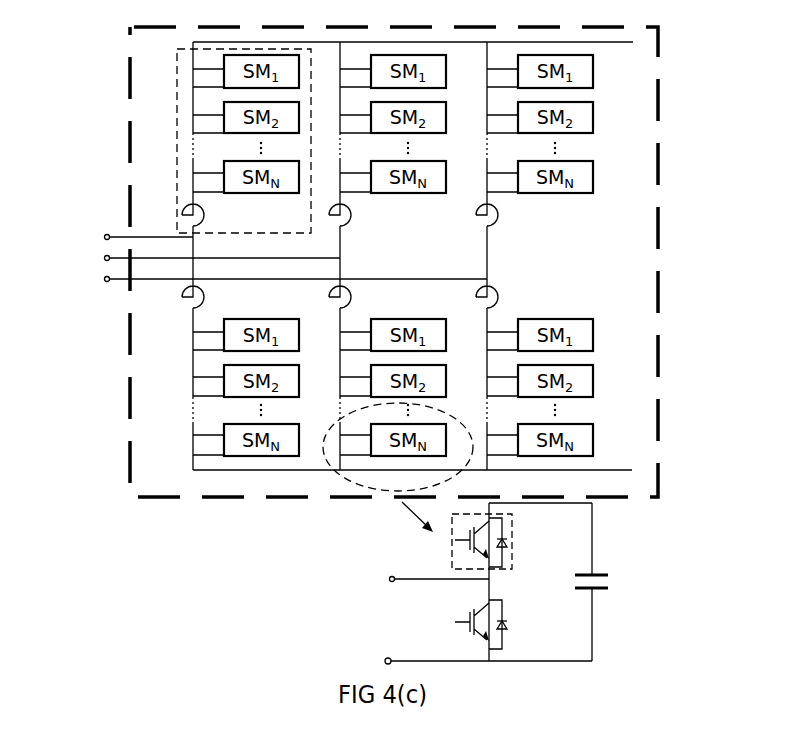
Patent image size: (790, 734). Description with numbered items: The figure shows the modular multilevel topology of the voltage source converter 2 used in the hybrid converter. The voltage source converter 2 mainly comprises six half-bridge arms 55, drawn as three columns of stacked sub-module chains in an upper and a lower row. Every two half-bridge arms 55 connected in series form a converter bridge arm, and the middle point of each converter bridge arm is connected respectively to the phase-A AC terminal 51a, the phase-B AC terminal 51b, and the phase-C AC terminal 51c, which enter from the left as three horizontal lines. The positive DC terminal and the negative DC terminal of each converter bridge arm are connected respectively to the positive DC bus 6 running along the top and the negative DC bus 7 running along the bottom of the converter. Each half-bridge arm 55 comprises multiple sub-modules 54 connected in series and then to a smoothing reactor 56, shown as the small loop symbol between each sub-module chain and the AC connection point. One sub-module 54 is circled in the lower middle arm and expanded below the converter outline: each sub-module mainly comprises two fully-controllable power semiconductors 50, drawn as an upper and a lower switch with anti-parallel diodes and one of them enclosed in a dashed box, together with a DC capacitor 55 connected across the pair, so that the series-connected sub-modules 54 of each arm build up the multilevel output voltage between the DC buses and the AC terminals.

The voltage source converter 2 is at (657, 235).
The positive DC bus 6 is at (610, 43).
The negative DC bus 7 is at (607, 470).
The fully-controllable power semiconductor 50 is at (452, 537).
The phase-A AC terminal 51a is at (105, 236).
The phase-B AC terminal 51b is at (105, 258).
The phase-C AC terminal 51c is at (105, 280).
The sub-module 54 is at (347, 485).
The half-bridge arm / DC capacitor 55 is at (177, 120).
The smoothing reactor 56 is at (182, 208).